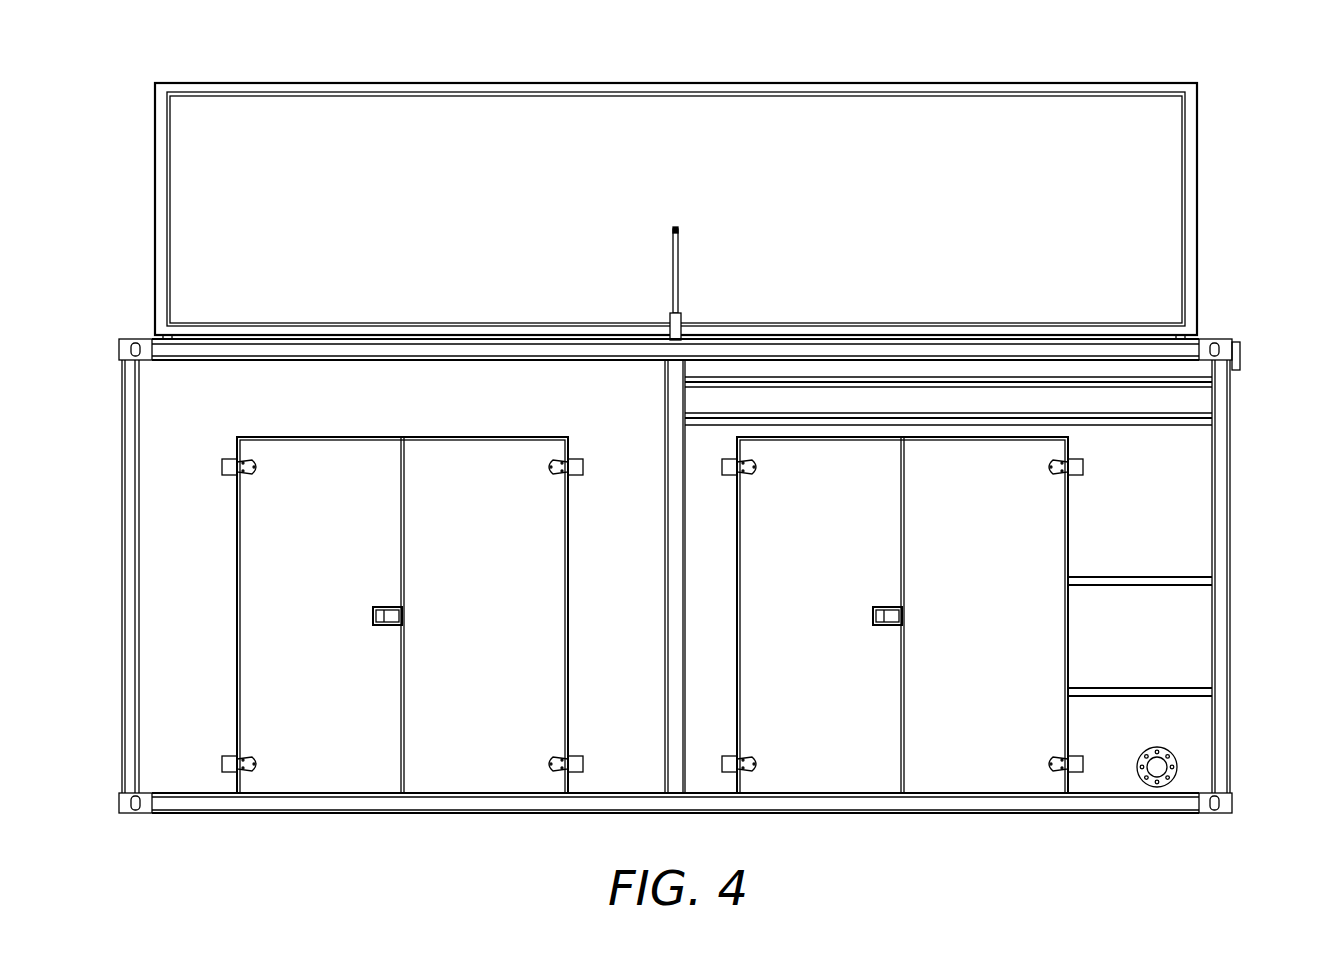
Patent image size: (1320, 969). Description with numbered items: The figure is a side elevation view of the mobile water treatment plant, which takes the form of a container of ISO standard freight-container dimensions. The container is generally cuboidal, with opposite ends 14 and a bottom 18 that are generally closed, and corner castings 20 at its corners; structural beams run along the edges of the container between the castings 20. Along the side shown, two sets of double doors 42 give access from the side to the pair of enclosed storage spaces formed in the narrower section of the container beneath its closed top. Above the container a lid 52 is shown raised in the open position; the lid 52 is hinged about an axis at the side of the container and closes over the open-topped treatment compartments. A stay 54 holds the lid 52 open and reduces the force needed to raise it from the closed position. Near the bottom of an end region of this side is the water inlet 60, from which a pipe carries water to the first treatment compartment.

The end 14 is at (122, 577).
The bottom 18 is at (1001, 813).
The corner casting 20 is at (119, 347).
The double doors 42 is at (325, 772).
The lid 52 is at (392, 133).
The stay 54 is at (679, 275).
The water inlet 60 is at (1157, 770).